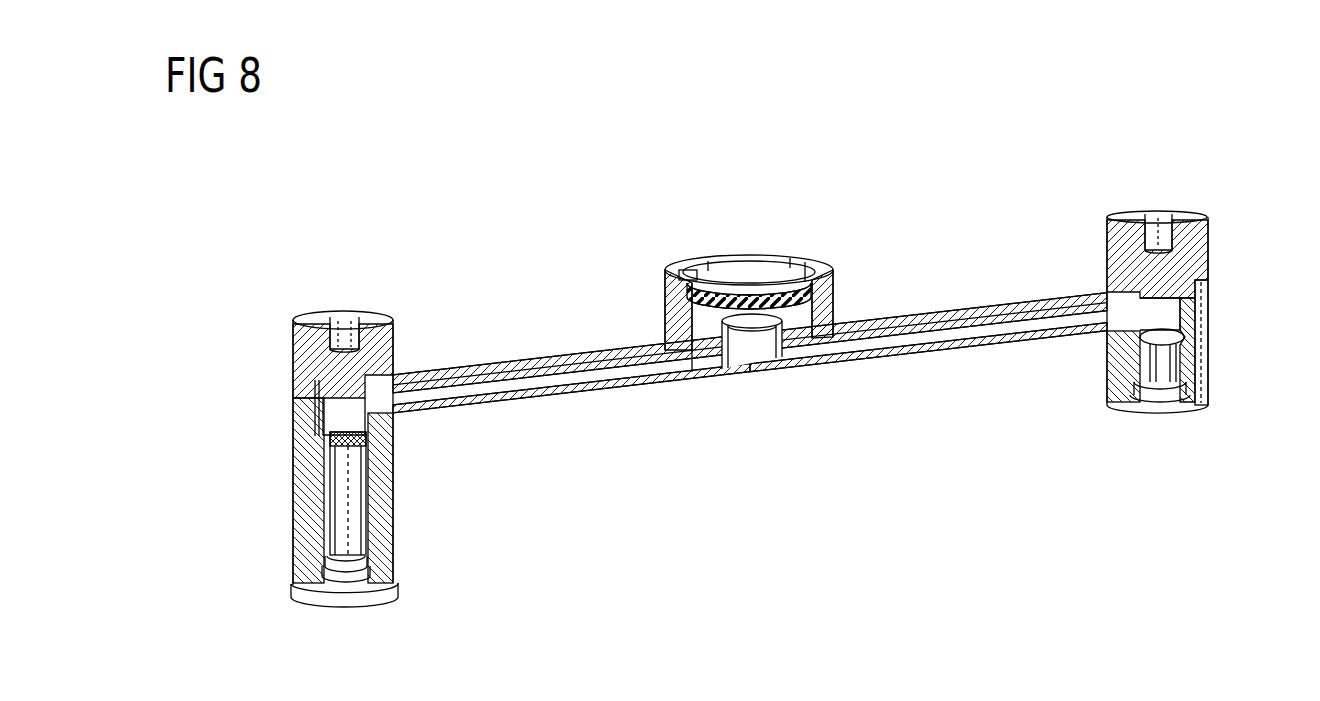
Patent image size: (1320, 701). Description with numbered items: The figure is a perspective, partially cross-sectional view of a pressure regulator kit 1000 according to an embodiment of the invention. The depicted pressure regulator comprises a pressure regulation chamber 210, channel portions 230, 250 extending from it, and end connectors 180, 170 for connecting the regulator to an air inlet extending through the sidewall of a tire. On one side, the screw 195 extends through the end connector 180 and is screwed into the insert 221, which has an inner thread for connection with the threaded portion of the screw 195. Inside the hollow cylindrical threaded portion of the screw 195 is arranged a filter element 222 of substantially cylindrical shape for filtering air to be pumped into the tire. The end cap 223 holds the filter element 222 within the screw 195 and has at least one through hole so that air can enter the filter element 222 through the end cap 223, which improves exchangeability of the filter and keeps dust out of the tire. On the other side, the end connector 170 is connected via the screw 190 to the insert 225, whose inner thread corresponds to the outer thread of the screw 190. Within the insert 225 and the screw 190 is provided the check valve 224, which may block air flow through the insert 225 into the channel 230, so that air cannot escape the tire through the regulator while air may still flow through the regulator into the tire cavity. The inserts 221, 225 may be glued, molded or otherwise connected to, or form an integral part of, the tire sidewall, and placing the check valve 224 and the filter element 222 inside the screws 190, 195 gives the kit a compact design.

The assembly 1000 is at (670, 260).
The end connector 170 is at (1200, 303).
The end connector 180 is at (305, 398).
The screw 190 is at (1155, 212).
The screw 195 is at (318, 312).
The pressure regulation chamber 210 is at (748, 265).
The insert 221 is at (303, 455).
The filter element 222 is at (320, 510).
The end cap 223 is at (308, 602).
The check valve 224 is at (1178, 362).
The insert 225 is at (1205, 400).
The channel portion 230 is at (938, 330).
The channel portion 250 is at (526, 378).